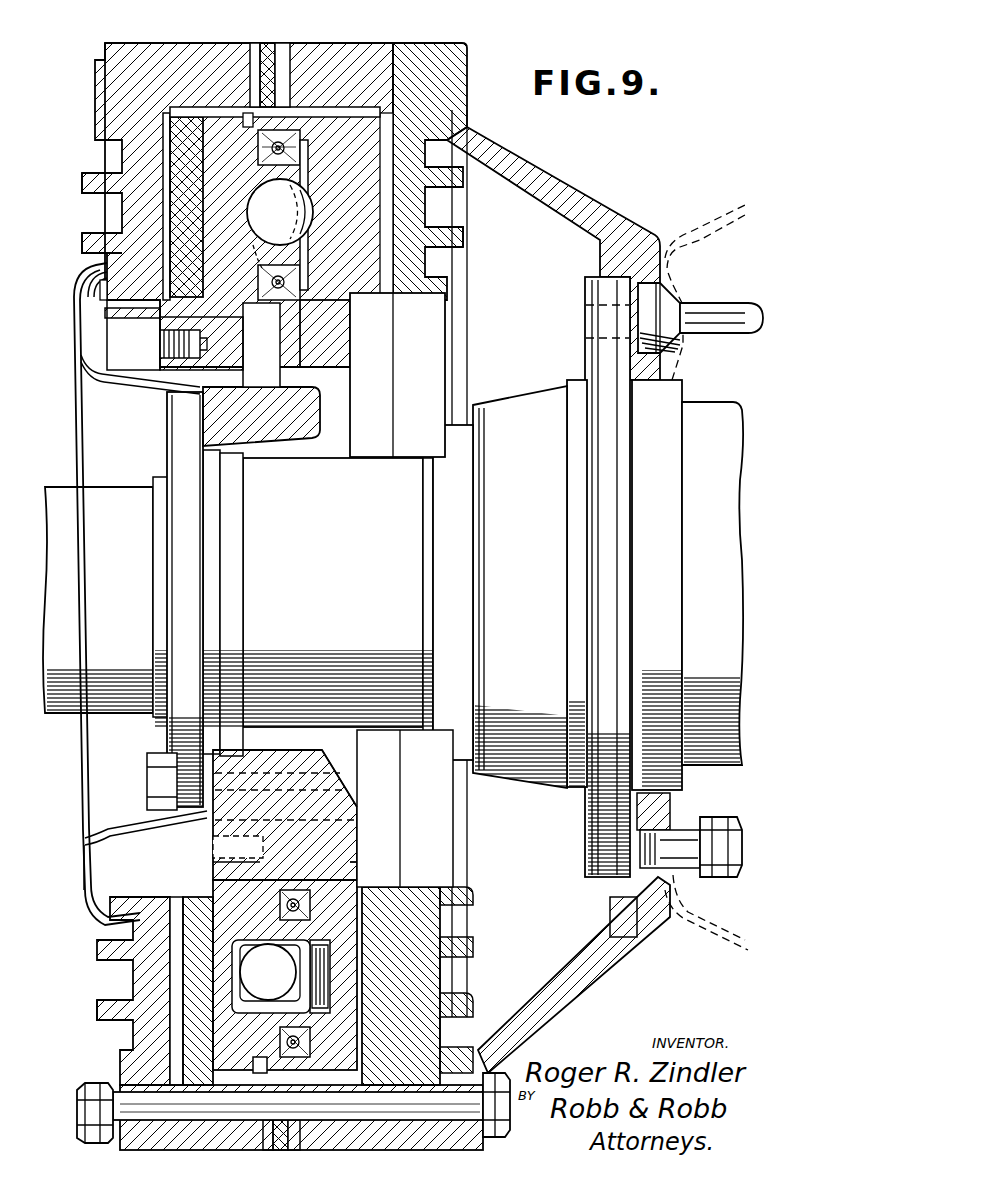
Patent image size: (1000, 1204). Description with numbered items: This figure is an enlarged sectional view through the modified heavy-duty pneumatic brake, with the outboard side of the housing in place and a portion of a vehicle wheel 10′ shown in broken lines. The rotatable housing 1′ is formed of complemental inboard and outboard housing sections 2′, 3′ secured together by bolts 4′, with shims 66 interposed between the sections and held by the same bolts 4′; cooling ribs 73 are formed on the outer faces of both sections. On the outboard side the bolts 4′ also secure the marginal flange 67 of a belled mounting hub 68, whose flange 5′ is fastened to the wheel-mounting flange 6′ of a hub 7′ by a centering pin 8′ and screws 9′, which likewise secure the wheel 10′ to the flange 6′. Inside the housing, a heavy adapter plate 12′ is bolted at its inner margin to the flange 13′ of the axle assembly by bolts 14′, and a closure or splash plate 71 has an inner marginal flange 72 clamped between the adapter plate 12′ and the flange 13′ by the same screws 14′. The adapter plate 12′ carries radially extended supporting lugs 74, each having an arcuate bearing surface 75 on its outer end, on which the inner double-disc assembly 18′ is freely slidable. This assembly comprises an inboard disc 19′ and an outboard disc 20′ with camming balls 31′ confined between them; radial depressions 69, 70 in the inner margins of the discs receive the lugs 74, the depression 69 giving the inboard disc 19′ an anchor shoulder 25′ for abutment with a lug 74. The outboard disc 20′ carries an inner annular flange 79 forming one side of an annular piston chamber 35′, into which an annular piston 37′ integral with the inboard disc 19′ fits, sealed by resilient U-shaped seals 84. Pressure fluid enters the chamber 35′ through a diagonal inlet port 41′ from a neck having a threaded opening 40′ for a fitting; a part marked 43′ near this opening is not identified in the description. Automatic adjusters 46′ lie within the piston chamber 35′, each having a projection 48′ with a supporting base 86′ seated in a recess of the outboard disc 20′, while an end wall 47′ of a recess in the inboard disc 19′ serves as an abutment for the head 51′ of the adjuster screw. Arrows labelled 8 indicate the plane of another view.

The rotatable housing 1′ is at (94, 112).
The inboard housing section 2′ is at (103, 78).
The outboard housing section 3′ is at (433, 70).
The bolts 4′ is at (78, 1108).
The flange 5′ is at (650, 815).
The wheel-mounting flange 6′ is at (587, 287).
The hub 7′ is at (545, 398).
The section line 8 is at (277, 30).
The centering pin 8′ is at (710, 302).
The screws 9′ is at (715, 818).
The wheel 10′ is at (700, 243).
The adapter plate 12′ is at (323, 753).
The flange of the axle assembly 13′ is at (177, 660).
The bolts 14′ is at (148, 760).
The inner double-disc assembly 18′ is at (333, 113).
The inboard disc 19′ is at (213, 303).
The outboard disc 20′ is at (333, 323).
The anchor shoulder 25′ is at (222, 842).
The camming balls 31′ is at (300, 219).
The annular piston chamber 35′ is at (308, 182).
The annular piston 37′ is at (247, 118).
The threaded opening 40′ is at (130, 382).
The inlet port 41′ is at (264, 244).
The screw 43′ is at (197, 342).
The automatic adjusters 46′ is at (167, 987).
The end wall 47′ is at (240, 943).
The projection 48′ is at (250, 946).
The head of the adjuster screw 51′ is at (230, 977).
The shims 66 is at (290, 42).
The marginal flange 67 is at (473, 1137).
The belled mounting hub 68 is at (570, 203).
The radial depressions 69 is at (213, 862).
The radial depressions 70 is at (307, 872).
The closure plate 71 is at (82, 855).
The inner marginal flange 72 is at (200, 418).
The cooling ribs 73 is at (83, 185).
The supporting lugs 74 is at (355, 826).
The arcuate bearing surface 75 is at (350, 863).
The annular flange 79 is at (263, 303).
The seals 84 is at (260, 148).
The supporting base 86′ is at (322, 945).